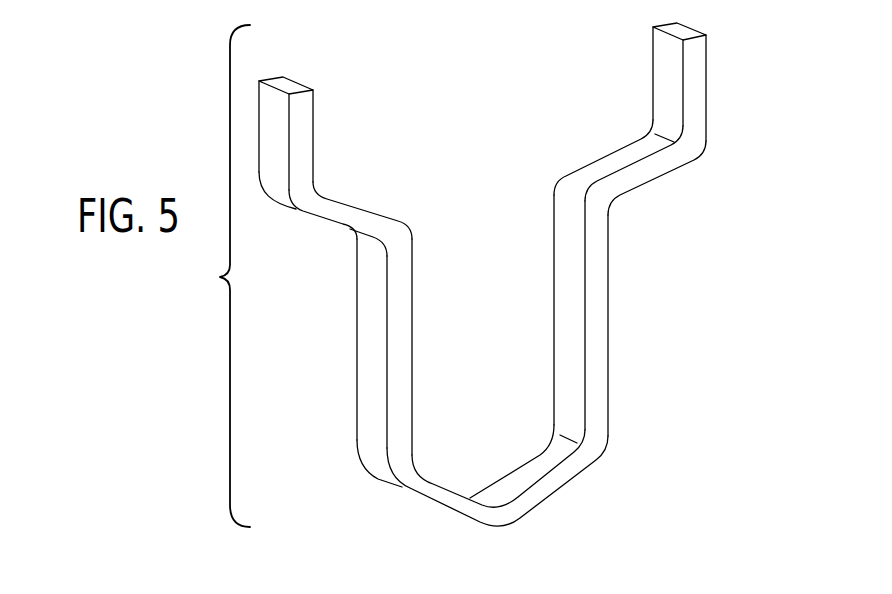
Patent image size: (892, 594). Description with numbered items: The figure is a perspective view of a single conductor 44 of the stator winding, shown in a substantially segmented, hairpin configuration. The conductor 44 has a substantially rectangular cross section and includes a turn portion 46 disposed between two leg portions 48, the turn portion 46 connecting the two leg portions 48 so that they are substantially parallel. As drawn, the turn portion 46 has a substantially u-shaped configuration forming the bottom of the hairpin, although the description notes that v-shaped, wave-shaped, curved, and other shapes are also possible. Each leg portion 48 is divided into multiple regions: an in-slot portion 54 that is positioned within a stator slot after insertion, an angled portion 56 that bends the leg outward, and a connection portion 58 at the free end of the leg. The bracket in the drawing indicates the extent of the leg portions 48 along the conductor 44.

The conductor 44 is at (514, 290).
The turn portion 46 is at (503, 517).
The leg portion 48 is at (220, 277).
The in-slot portion 54 is at (372, 347).
The angled portion 56 is at (353, 207).
The connection portion 58 is at (305, 138).